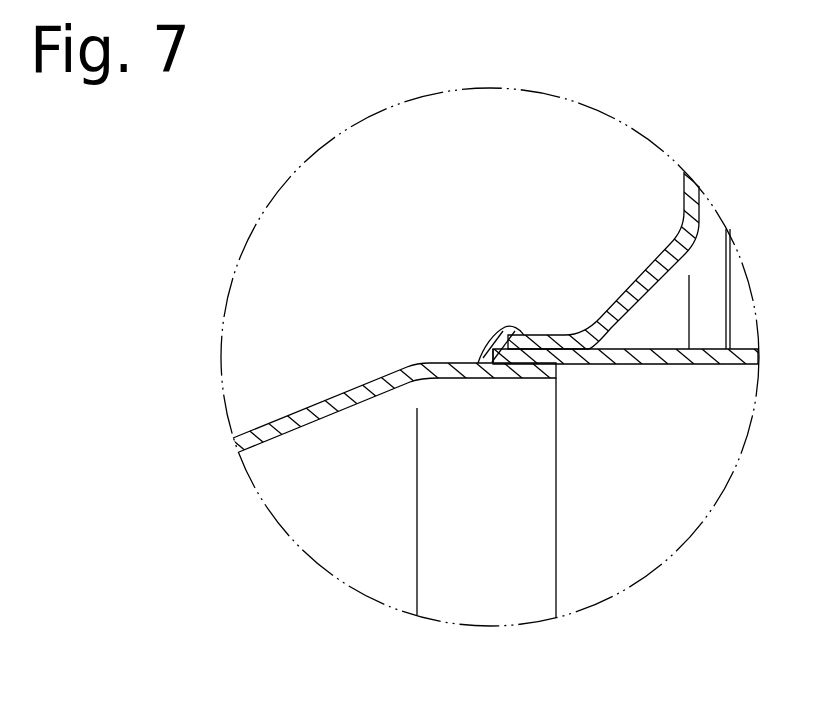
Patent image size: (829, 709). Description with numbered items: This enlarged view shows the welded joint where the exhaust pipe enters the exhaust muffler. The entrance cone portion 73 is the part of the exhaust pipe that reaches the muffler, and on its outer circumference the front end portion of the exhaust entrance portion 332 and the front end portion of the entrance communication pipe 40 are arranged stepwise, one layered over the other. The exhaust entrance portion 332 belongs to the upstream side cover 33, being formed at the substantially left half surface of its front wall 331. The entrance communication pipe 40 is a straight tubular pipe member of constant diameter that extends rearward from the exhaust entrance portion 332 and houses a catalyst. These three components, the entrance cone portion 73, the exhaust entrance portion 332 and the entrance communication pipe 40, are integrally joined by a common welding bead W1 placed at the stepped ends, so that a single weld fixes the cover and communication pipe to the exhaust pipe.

The entrance cone portion 73 is at (333, 397).
The entrance communication pipe 40 is at (595, 364).
The upstream side cover 33 is at (642, 274).
The front wall 331 is at (683, 193).
The exhaust entrance portion 332 is at (533, 335).
The welding bead W1 is at (492, 331).